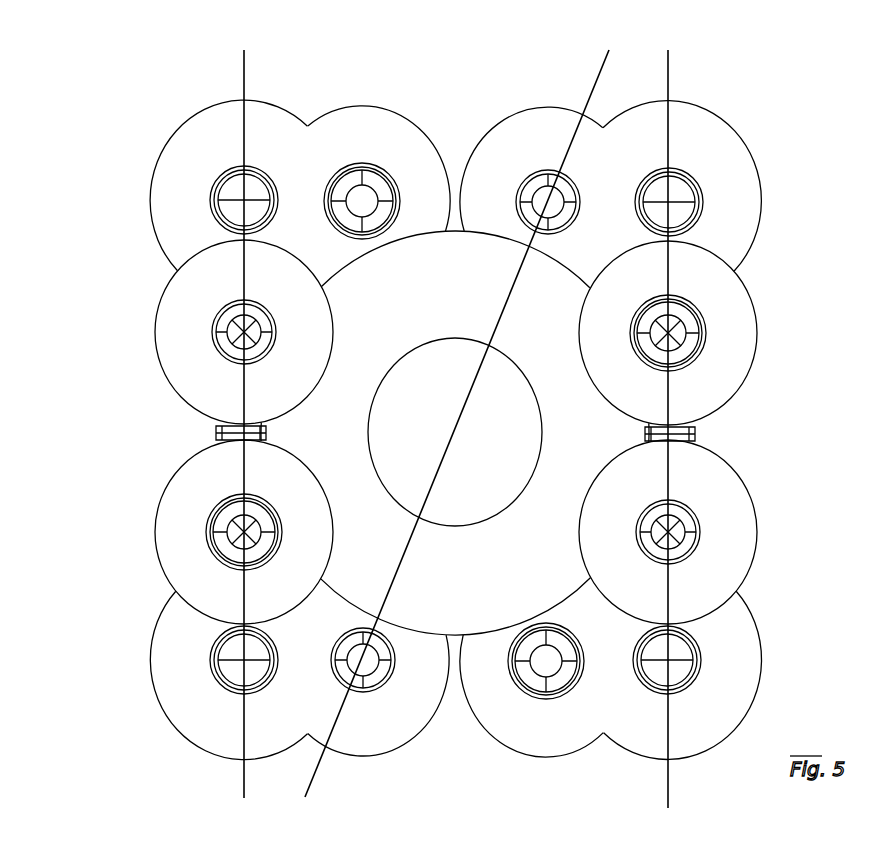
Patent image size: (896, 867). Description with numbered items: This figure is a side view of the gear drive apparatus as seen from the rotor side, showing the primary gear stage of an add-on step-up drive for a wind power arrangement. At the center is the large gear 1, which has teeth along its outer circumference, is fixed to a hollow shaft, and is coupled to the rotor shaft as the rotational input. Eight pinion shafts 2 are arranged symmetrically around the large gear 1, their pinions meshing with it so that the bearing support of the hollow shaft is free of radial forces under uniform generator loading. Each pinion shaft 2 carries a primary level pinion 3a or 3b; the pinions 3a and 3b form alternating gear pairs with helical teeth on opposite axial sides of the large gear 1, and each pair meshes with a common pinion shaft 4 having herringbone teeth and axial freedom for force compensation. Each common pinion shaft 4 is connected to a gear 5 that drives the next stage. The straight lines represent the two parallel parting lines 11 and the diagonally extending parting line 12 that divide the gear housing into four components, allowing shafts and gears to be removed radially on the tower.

The large gear 1 is at (598, 404).
The pinion shaft 2 is at (378, 182).
The primary level pinion 3a is at (497, 158).
The primary level pinion 3b is at (343, 143).
The common pinion shaft 4 is at (232, 190).
The gear 5 is at (165, 185).
The parallel parting line 11 is at (243, 72).
The diagonally extending parting line 12 is at (600, 88).